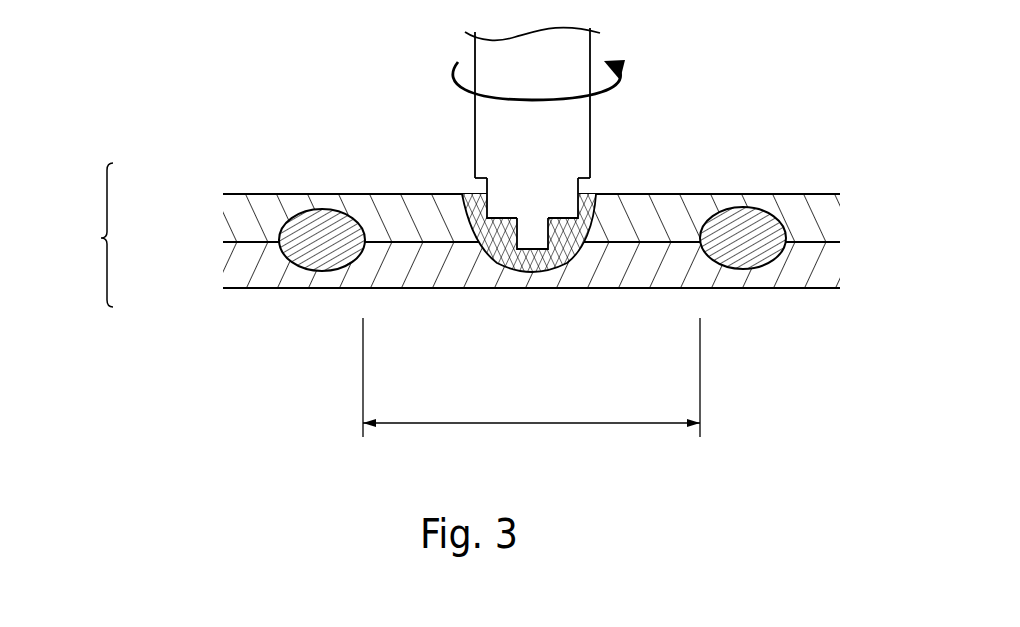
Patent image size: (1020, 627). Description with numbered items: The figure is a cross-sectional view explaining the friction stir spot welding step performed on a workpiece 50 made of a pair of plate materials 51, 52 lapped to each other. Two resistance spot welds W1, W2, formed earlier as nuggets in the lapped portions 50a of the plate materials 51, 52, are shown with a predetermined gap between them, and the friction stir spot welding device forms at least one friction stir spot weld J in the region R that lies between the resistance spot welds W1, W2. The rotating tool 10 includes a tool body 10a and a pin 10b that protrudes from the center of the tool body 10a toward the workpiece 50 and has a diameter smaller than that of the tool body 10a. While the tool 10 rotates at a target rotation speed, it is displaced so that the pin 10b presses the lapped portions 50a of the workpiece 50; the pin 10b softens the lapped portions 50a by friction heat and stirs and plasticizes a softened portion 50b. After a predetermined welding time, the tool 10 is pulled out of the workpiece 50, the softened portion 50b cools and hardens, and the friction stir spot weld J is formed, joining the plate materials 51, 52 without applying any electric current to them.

The tool 10 is at (551, 191).
The tool body 10a is at (548, 187).
The pin 10b is at (544, 235).
The workpiece 50 is at (451, 235).
The lapped portions 50a is at (370, 192).
The softened portion 50b is at (490, 257).
The plate material 51 is at (246, 195).
The plate material 52 is at (263, 288).
The resistance spot weld W1 is at (350, 265).
The resistance spot weld W2 is at (752, 265).
The friction stir spot weld J is at (531, 273).
The region R is at (531, 389).